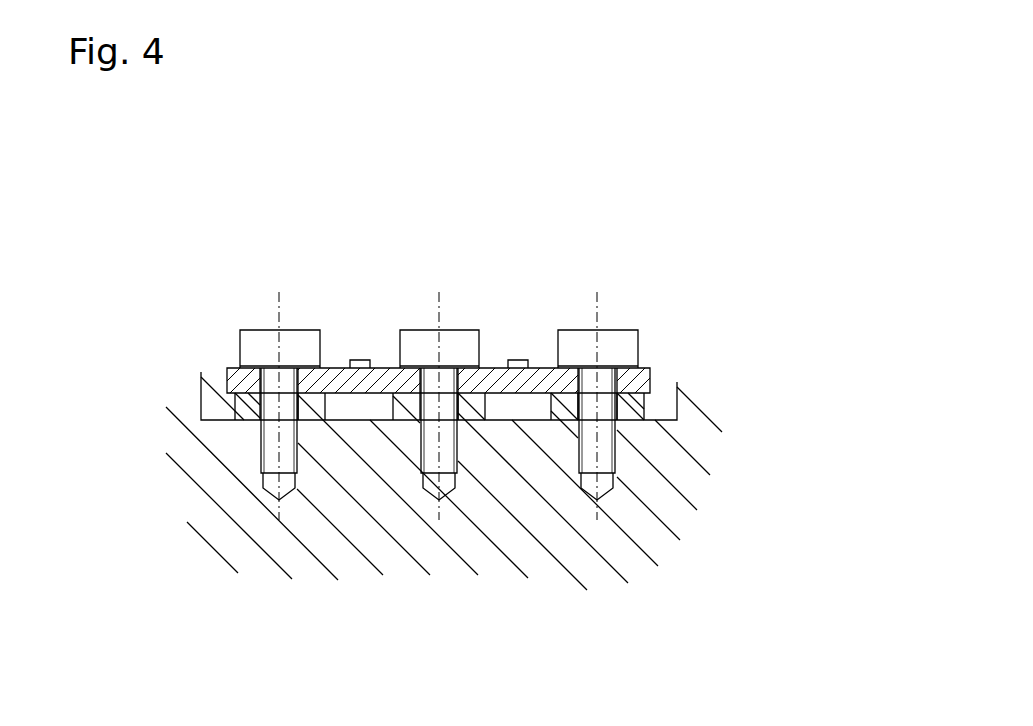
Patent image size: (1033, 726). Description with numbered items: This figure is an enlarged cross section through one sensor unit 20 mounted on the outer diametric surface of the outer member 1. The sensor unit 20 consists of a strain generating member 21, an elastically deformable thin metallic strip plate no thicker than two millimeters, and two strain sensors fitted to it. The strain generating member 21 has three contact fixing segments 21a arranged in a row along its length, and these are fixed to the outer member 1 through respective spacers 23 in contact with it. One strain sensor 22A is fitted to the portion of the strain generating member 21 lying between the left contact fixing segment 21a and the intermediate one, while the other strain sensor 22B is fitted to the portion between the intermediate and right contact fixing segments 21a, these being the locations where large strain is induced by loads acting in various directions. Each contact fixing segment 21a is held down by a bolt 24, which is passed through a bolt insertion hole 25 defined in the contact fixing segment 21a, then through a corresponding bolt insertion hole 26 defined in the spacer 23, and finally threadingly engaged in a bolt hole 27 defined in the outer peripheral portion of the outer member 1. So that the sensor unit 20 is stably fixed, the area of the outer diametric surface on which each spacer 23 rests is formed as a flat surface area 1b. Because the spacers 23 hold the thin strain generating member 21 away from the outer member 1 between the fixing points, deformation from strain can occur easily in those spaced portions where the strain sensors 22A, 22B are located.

The outer member 1 is at (475, 500).
The flat surface area 1b is at (522, 412).
The sensor unit 20 is at (422, 422).
The strain generating member 21 is at (540, 368).
The contact fixing segment 21a is at (342, 372).
The strain sensor 22A is at (360, 358).
The strain sensor 22B is at (523, 358).
The spacer 23 is at (201, 372).
The bolt 24 is at (258, 330).
The bolt insertion hole 25 is at (270, 378).
The bolt insertion hole 26 is at (261, 443).
The bolt hole 27 is at (292, 495).